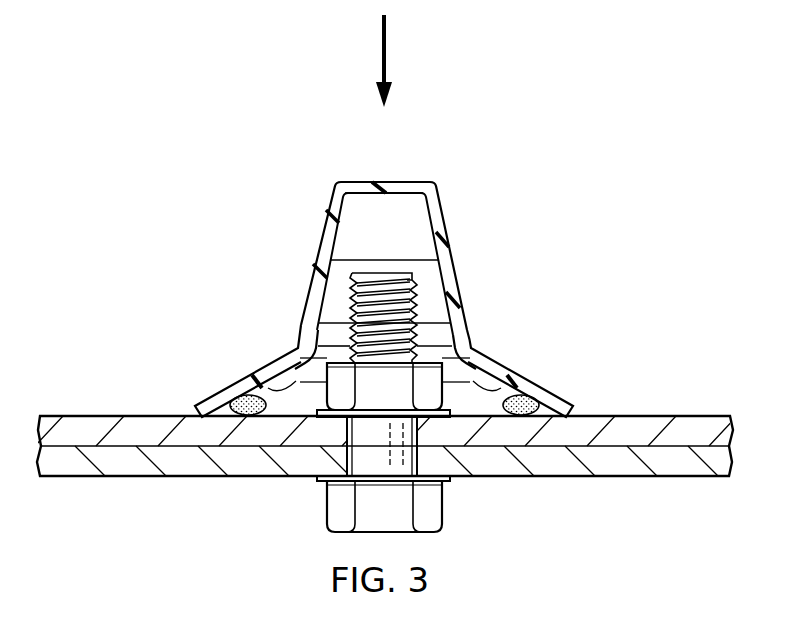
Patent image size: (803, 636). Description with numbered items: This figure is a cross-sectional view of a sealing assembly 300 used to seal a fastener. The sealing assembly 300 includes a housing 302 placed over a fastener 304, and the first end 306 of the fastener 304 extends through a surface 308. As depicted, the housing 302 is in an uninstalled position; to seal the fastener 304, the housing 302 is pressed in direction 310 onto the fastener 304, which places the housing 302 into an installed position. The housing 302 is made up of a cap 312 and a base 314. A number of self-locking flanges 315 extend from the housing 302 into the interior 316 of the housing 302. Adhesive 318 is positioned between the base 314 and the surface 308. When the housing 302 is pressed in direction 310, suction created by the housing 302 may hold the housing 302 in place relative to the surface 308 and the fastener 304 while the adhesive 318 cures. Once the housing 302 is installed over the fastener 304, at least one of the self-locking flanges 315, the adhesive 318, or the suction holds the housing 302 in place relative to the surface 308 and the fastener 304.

The sealing assembly 300 is at (312, 122).
The housing 302 is at (318, 205).
The fastener 304 is at (432, 350).
The first end 306 is at (380, 271).
The surface 308 is at (147, 417).
The direction 310 is at (386, 50).
The cap 312 is at (405, 181).
The base 314 is at (575, 389).
The number of self-locking flanges 315 is at (247, 378).
The interior 316 is at (421, 222).
The adhesive 318 is at (498, 394).